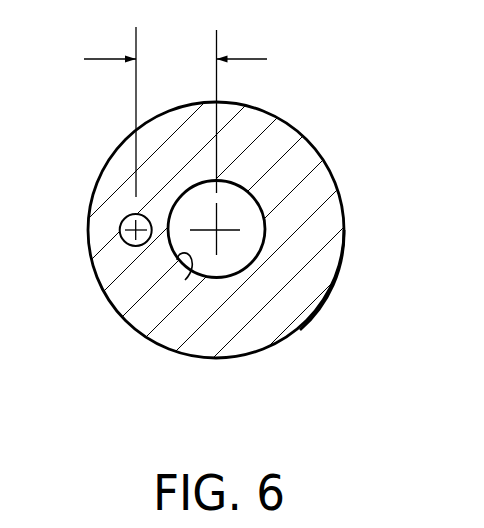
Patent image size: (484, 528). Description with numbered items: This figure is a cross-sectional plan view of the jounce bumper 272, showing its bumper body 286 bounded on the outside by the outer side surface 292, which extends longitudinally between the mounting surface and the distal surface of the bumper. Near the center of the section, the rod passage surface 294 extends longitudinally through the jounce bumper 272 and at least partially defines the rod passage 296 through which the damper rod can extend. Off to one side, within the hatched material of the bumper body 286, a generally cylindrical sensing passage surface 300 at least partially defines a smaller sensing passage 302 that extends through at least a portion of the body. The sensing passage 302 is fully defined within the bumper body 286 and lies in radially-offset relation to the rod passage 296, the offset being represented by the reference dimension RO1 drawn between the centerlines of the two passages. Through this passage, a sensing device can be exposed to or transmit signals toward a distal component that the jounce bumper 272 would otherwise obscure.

The jounce bumper 272 is at (326, 154).
The bumper body 286 is at (275, 142).
The outer side surface 292 is at (344, 244).
The rod passage surface 294 is at (185, 280).
The rod passage 296 is at (228, 248).
The sensing passage surface 300 is at (125, 218).
The sensing passage 302 is at (122, 242).
The radial-offset reference dimension RO1 is at (103, 58).